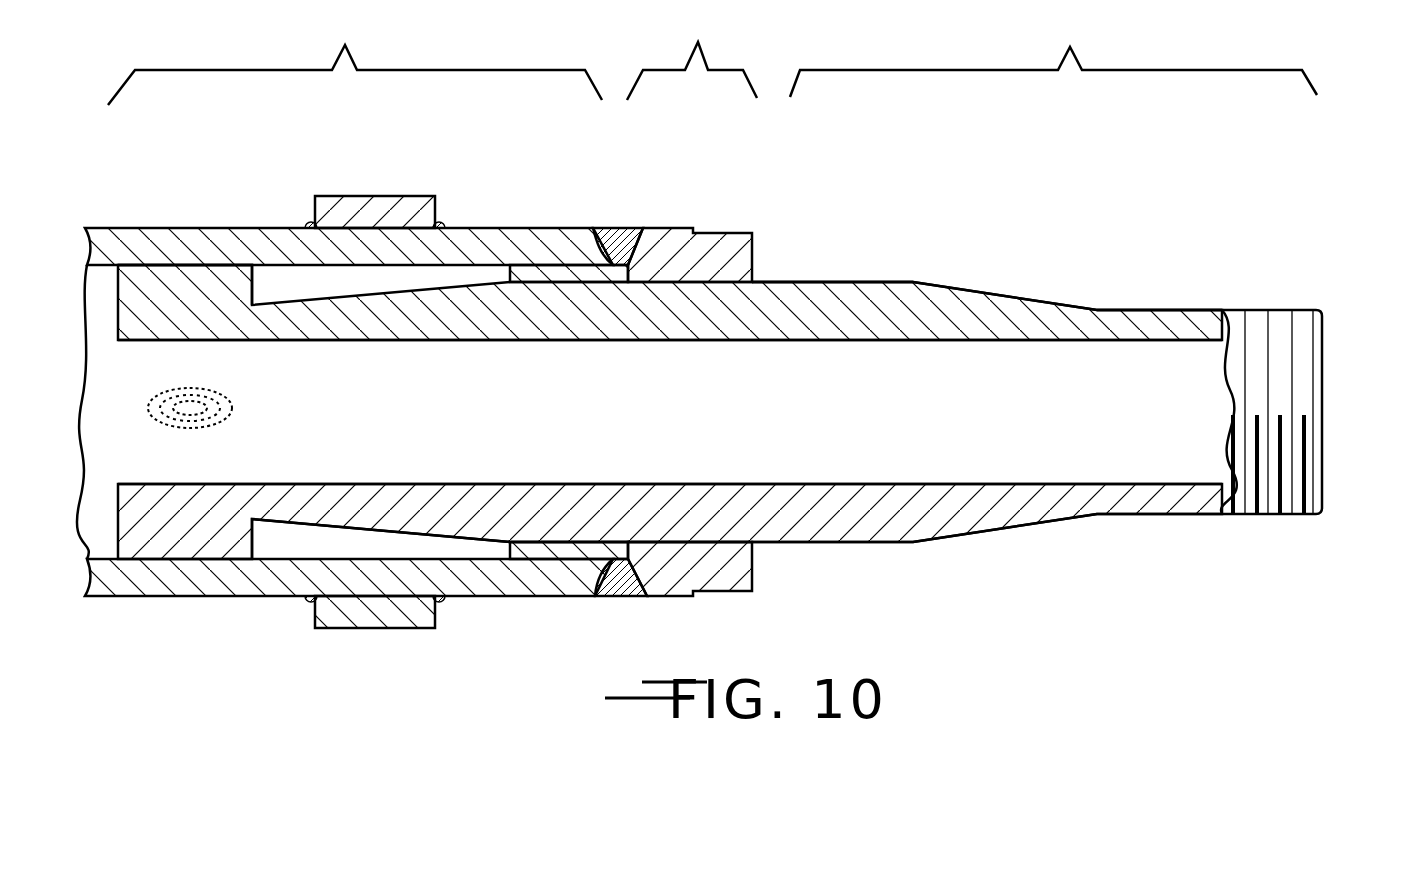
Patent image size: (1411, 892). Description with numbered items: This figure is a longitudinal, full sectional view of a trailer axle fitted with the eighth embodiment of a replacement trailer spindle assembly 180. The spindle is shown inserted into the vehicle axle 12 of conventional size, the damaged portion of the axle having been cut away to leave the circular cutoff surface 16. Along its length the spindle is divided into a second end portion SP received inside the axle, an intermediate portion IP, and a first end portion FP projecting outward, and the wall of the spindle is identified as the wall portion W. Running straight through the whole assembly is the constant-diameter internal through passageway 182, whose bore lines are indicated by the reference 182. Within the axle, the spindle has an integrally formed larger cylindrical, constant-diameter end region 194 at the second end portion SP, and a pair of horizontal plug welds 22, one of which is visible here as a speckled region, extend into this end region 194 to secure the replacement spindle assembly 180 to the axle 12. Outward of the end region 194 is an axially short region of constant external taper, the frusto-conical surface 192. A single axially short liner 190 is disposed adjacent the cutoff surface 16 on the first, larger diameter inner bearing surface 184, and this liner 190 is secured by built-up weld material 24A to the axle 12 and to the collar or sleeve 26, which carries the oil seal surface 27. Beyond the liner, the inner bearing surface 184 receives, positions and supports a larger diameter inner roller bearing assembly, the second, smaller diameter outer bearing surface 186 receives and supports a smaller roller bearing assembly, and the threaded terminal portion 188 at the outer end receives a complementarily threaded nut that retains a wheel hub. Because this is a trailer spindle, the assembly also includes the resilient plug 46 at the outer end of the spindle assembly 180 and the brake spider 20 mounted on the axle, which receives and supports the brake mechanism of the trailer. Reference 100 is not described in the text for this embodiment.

The vehicle axle 12 is at (465, 238).
The circular cutoff surface 16 is at (607, 582).
The brake spider 20 is at (372, 196).
The horizontal plug weld 22 is at (190, 415).
The built-up weld material 24A is at (632, 228).
The collar or sleeve 26 is at (718, 577).
The oil seal surface 27 is at (715, 232).
The resilient plug 46 is at (1323, 430).
The inner tube 100 is at (330, 340).
The replacement trailer spindle assembly 180 is at (923, 268).
The internal through passageway 182 is at (653, 405).
The inner bearing surface 184 is at (838, 282).
The outer bearing surface 186 is at (1163, 310).
The threaded terminal portion 188 is at (1273, 312).
The axially short liner 190 is at (544, 276).
The frusto-conical surface 192 is at (313, 533).
The larger cylindrical end region 194 is at (177, 276).
The wall portion W is at (560, 517).
The second end portion SP is at (355, 59).
The intermediate portion IP is at (692, 56).
The first end portion FP is at (1053, 56).